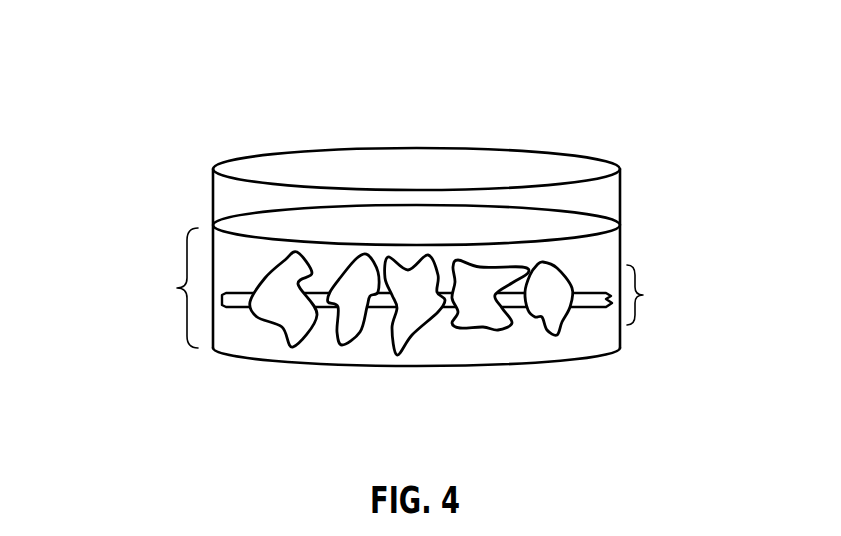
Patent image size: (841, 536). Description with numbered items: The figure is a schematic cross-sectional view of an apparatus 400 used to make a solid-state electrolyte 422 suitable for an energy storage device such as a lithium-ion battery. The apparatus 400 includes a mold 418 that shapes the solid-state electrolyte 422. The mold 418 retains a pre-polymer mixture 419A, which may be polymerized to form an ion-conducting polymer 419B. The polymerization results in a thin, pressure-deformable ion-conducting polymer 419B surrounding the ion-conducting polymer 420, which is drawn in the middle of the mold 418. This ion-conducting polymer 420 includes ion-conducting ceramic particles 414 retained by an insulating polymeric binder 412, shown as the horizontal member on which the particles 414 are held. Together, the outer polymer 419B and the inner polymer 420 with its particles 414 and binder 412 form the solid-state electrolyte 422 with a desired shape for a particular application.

The apparatus 400 is at (104, 89).
The insulating polymeric binder 412 is at (515, 296).
The ion-conducting ceramic particles 414 is at (553, 290).
The mold 418 is at (622, 190).
The pre-polymer mixture 419A is at (237, 246).
The ion-conducting polymer 419B is at (240, 335).
The ion-conducting polymer 420 is at (658, 295).
The solid-state electrolyte 422 is at (163, 288).